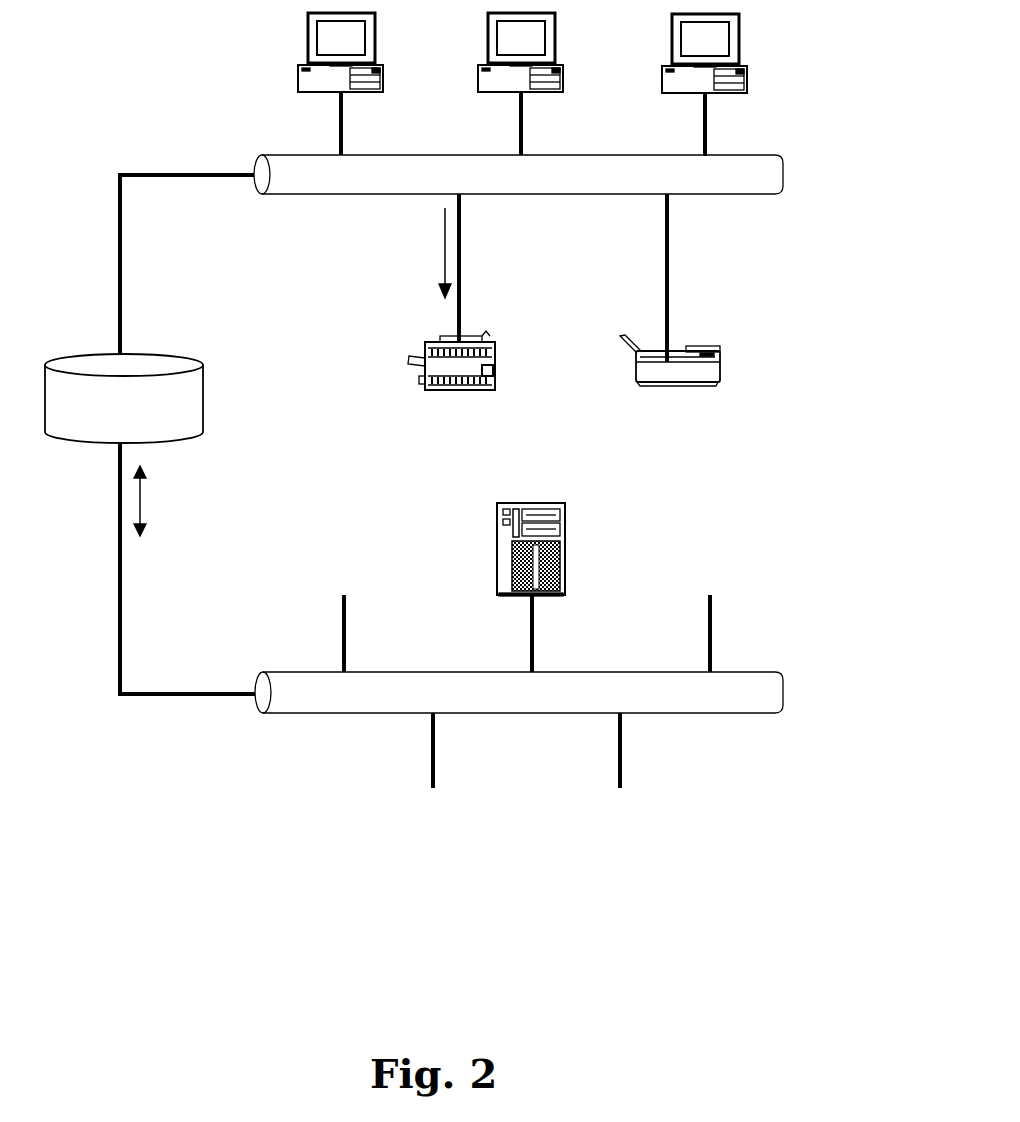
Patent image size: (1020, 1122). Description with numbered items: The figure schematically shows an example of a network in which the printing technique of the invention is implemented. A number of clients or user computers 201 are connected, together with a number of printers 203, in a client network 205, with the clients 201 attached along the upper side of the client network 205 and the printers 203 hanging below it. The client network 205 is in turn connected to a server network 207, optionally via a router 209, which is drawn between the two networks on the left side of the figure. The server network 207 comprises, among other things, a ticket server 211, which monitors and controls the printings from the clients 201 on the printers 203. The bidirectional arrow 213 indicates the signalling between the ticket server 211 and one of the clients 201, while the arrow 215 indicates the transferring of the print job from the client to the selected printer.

The client computer 201 is at (385, 74).
The printer 203 is at (497, 365).
The client network 205 is at (790, 170).
The server network 207 is at (790, 686).
The router 209 is at (208, 403).
The ticket server 211 is at (567, 553).
The bidirectional arrow 213 is at (144, 500).
The arrow 215 is at (444, 235).